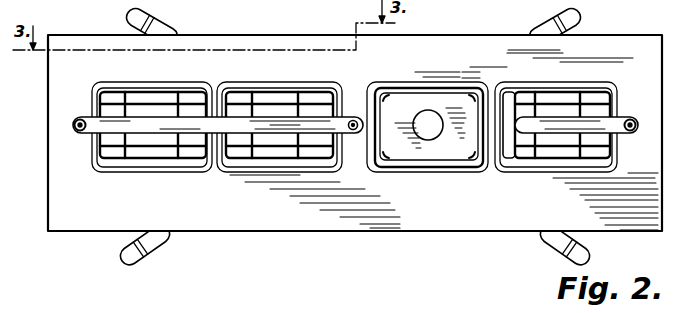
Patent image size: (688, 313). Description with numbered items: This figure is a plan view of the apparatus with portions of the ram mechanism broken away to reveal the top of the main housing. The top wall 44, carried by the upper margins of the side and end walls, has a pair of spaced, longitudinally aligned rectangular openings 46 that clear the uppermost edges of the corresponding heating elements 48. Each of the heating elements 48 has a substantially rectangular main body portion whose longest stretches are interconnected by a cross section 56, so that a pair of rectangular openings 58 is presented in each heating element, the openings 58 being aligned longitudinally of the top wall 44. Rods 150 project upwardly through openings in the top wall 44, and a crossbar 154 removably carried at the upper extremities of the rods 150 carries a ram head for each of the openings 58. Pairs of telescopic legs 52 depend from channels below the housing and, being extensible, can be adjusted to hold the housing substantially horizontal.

The top wall 44 is at (420, 232).
The rectangular openings 46 is at (158, 173).
The heating elements 48 is at (117, 172).
The telescopic legs 52 is at (167, 32).
The cross section 56 is at (213, 100).
The rectangular openings 58 is at (140, 86).
The rods 150 is at (77, 134).
The crossbar 154 is at (88, 117).